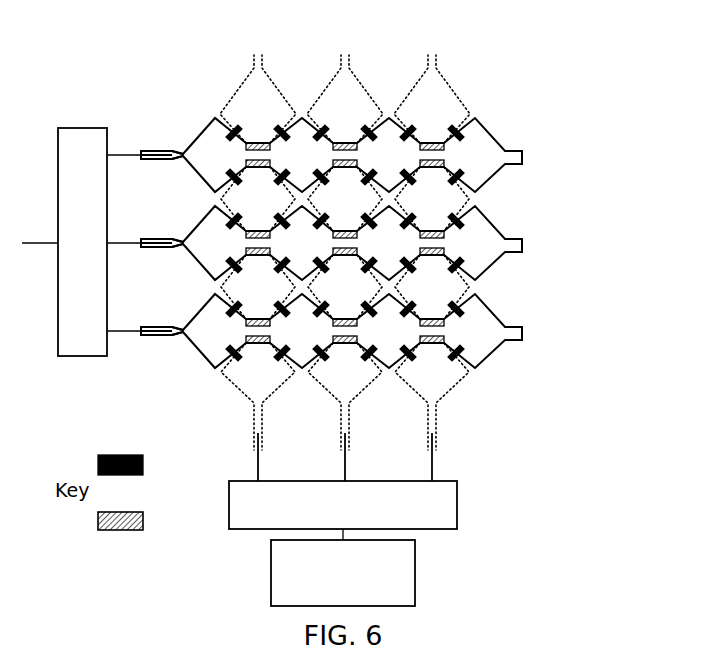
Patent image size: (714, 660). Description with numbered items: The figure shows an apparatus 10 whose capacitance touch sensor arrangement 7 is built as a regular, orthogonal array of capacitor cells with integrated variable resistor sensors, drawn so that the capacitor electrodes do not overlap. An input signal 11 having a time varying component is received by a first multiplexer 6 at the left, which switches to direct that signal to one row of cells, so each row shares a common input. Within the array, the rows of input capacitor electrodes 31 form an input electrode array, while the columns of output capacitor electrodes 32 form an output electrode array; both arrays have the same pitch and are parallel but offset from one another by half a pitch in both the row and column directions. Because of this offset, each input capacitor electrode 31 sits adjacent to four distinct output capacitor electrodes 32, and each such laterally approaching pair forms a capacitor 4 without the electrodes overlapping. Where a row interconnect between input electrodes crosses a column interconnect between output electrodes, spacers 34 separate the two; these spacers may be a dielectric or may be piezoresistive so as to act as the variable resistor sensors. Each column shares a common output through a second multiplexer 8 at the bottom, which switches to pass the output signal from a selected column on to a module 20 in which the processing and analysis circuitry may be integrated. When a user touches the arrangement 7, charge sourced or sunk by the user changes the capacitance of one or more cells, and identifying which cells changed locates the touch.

The apparatus 10 is at (358, 320).
The capacitance touch sensor arrangement 7 is at (324, 320).
The first capacitor electrode 31 is at (198, 165).
The second capacitor electrode 32 is at (244, 118).
The capacitor 4 is at (118, 455).
The spacer 34 is at (130, 531).
The first selection circuitry 6 is at (82, 358).
The input signal 11 is at (40, 243).
The second selection circuitry 8 is at (458, 508).
The module 20 is at (417, 571).